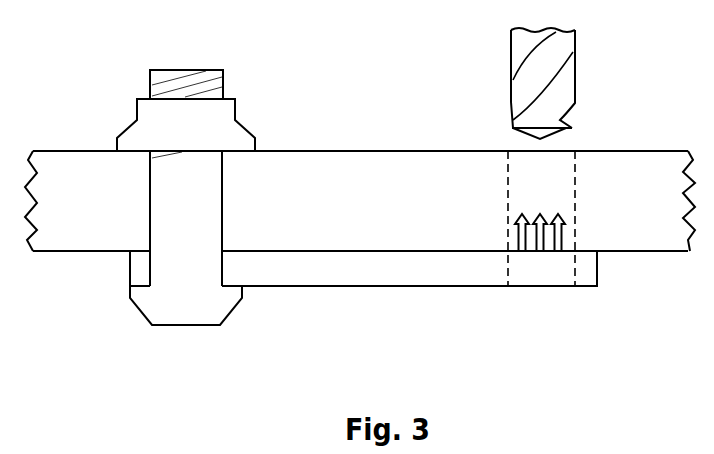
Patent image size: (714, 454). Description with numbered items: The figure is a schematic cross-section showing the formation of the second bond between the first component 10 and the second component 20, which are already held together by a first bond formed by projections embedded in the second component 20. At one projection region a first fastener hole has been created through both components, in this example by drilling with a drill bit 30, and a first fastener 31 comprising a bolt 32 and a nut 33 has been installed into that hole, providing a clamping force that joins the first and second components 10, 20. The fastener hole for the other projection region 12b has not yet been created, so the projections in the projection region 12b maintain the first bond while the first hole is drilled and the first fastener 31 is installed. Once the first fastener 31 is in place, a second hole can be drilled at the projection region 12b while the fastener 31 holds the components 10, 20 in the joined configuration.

The first component 10 is at (384, 280).
The second component 20 is at (381, 215).
The projection region 12b is at (540, 262).
The drill bit 30 is at (533, 83).
The first fastener 31 is at (81, 103).
The bolt 32 is at (177, 265).
The nut 33 is at (213, 127).